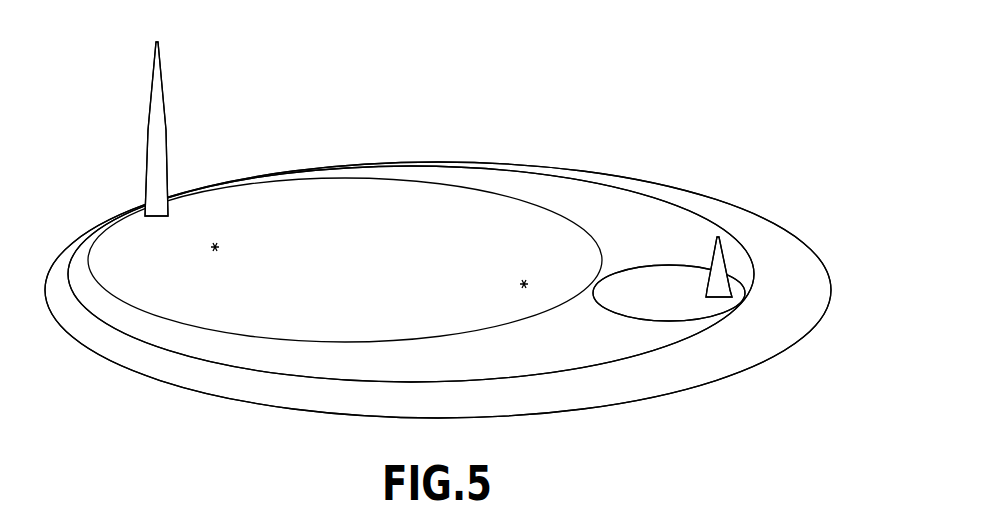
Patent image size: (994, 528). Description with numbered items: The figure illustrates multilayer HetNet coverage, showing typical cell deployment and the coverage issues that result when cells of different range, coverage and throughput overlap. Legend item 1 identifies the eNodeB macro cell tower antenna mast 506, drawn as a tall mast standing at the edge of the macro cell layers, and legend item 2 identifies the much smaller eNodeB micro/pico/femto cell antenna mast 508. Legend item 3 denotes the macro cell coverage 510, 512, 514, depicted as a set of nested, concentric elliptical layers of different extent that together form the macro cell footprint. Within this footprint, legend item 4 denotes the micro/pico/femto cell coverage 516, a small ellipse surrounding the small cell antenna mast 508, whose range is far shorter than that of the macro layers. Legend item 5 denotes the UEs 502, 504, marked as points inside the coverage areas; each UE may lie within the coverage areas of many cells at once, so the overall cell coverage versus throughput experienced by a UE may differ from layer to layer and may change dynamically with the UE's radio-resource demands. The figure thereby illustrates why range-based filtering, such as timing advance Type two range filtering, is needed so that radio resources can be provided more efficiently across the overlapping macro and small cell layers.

The eNodeB macro cell tower antenna mast (legend item) 1 is at (165, 130).
The eNodeB micro/pico/femto cell antenna mast (legend item) 2 is at (725, 265).
The macro cell coverage (legend item) 3 is at (692, 202).
The micro/pico/femto cell coverage (legend item) 4 is at (635, 307).
The UEs (legend item) 5 is at (524, 284).
The UE 502 is at (215, 247).
The UE 504 is at (524, 284).
The eNodeB macro cell tower antenna mast 506 is at (150, 130).
The eNodeB micro/pico/femto cell antenna mast 508 is at (712, 262).
The macro cell coverage 510 is at (325, 187).
The macro cell coverage 512 is at (419, 173).
The macro cell coverage 514 is at (767, 233).
The micro/pico/femto cell coverage 516 is at (667, 312).